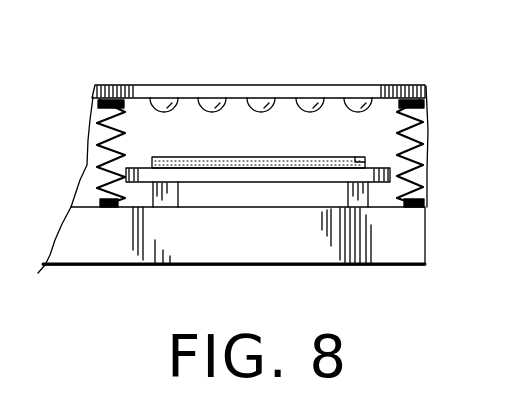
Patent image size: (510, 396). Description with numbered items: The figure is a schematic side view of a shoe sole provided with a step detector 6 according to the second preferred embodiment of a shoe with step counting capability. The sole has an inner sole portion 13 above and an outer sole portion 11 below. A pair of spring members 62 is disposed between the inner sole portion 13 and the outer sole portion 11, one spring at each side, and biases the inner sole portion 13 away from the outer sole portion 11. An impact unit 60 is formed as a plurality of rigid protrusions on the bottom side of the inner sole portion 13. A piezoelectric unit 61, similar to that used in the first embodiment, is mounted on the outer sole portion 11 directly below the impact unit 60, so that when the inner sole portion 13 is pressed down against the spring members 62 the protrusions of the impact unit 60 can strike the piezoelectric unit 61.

The step detector 6 is at (78, 143).
The outer sole portion 11 is at (383, 252).
The inner sole portion 13 is at (367, 92).
The impact unit 60 is at (205, 115).
The piezoelectric unit 61 is at (349, 158).
The spring members 62 is at (97, 162).